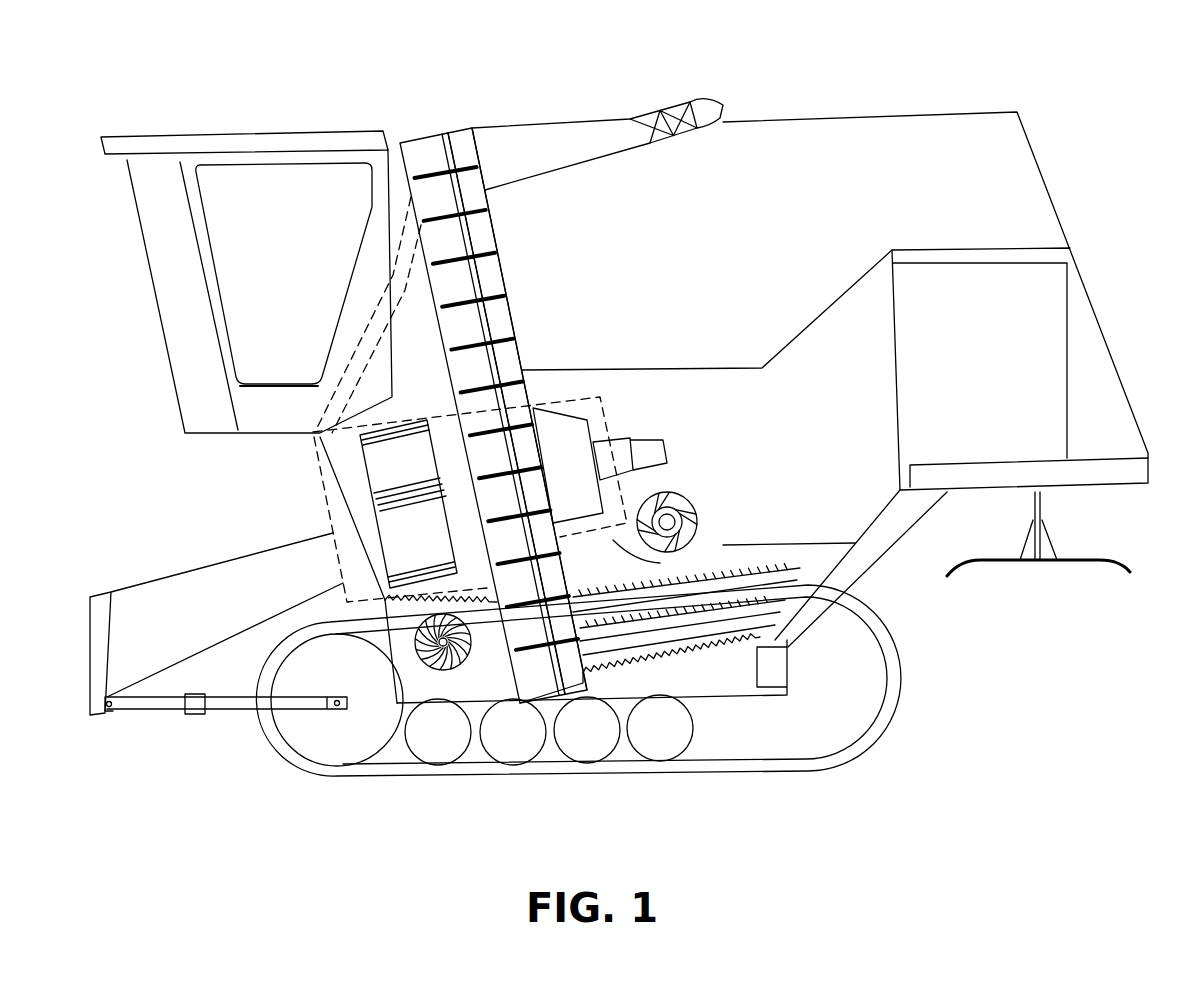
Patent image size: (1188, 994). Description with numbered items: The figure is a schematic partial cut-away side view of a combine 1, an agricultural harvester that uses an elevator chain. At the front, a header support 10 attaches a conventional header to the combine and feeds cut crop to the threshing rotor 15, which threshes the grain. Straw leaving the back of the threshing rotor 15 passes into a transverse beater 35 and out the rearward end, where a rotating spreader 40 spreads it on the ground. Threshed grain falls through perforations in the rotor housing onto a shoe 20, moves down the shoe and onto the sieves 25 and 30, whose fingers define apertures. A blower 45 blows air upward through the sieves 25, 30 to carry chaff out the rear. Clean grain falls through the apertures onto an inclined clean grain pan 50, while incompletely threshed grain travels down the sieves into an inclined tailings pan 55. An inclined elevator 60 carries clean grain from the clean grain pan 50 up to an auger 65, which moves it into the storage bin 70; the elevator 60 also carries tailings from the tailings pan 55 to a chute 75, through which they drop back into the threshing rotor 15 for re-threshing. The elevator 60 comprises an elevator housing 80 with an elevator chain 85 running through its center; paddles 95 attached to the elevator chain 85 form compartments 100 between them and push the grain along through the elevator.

The combine 1 is at (1060, 90).
The header support 10 is at (187, 607).
The threshing rotor 15 is at (333, 473).
The shoe 20 is at (478, 604).
The sieve 25 is at (745, 573).
The sieve 30 is at (848, 587).
The transverse beater 35 is at (687, 493).
The rotating spreader 40 is at (1053, 562).
The blower 45 is at (460, 652).
The clean grain pan 50 is at (688, 598).
The tailings pan 55 is at (728, 641).
The elevator 60 is at (430, 133).
The auger 65 is at (688, 100).
The storage bin 70 is at (880, 128).
The chute 75 is at (400, 247).
The elevator housing 80 is at (518, 355).
The elevator chain 85 is at (480, 313).
The paddles 95 is at (490, 253).
The compartments 100 is at (480, 218).